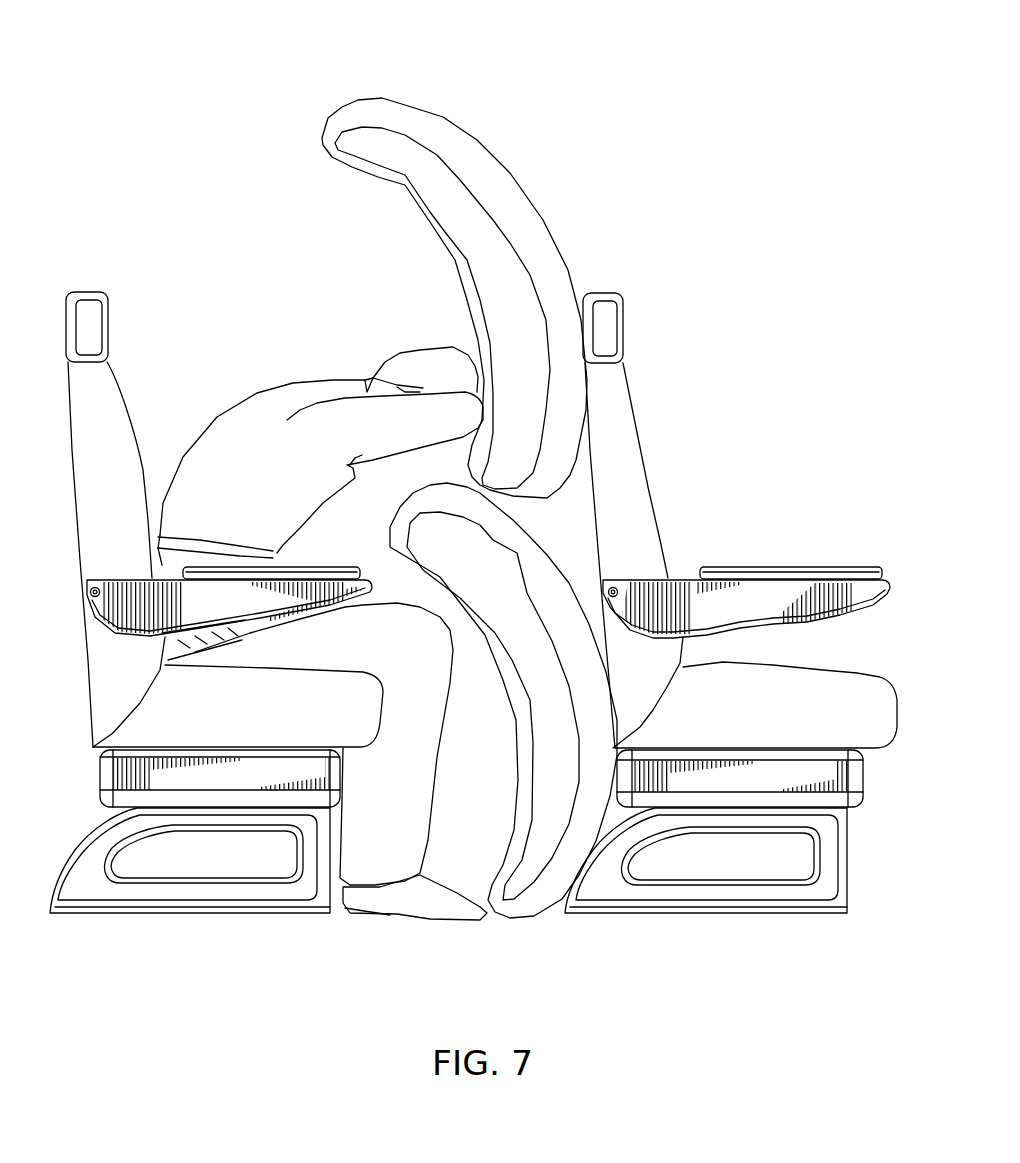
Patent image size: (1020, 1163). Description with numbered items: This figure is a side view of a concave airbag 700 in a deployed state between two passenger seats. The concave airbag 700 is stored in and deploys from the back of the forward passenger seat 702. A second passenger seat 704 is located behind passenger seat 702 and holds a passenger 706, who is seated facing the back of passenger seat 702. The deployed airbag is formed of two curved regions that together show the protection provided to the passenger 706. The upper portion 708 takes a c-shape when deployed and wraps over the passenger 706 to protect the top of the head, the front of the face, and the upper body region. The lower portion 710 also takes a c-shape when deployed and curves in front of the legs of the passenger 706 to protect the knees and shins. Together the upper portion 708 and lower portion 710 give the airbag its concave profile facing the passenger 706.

The concave airbag 700 is at (664, 146).
The passenger seat 702 is at (656, 440).
The passenger seat 704 is at (108, 326).
The passenger 706 is at (287, 392).
The upper portion 708 is at (347, 108).
The lower portion 710 is at (522, 917).